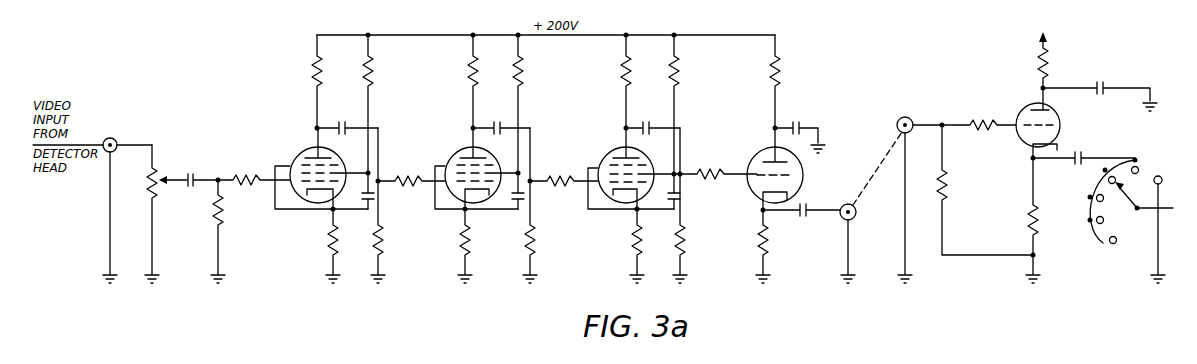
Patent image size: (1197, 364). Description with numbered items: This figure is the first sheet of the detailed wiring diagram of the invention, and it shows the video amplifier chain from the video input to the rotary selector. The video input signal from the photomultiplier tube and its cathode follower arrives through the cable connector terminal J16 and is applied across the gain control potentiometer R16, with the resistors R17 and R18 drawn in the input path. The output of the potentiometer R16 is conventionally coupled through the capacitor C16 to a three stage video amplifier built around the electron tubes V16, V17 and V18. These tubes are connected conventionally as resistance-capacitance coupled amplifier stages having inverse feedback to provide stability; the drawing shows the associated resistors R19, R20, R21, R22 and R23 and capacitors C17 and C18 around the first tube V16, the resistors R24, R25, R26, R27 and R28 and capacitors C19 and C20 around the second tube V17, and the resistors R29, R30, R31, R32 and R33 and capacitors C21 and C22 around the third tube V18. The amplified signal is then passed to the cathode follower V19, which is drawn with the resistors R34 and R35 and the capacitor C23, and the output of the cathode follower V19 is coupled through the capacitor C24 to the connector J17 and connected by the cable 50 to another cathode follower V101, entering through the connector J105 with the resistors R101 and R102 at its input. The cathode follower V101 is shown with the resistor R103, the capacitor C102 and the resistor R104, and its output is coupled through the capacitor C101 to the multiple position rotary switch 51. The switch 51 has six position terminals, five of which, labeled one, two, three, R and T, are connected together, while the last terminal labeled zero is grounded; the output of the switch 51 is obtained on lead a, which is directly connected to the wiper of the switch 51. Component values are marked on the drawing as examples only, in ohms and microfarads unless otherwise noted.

The cable connector terminal J16 is at (127, 202).
The gain control potentiometer R16 is at (152, 214).
The capacitor C16 is at (191, 165).
The resistor 10K R17 is at (204, 231).
The resistor 100 R18 is at (254, 182).
The electron tube V16 is at (322, 166).
The resistor 4.7K R19 is at (298, 83).
The resistor 27K R20 is at (384, 114).
The capacitor .01 C17 is at (355, 195).
The capacitor .01 C18 is at (347, 114).
The resistor 1K R21 is at (316, 246).
The resistor 100K R22 is at (395, 205).
The resistor 100 R23 is at (411, 182).
The electron tube V17 is at (475, 166).
The resistor 4.7K R24 is at (454, 83).
The resistor 27K R25 is at (534, 114).
The capacitor .01 C19 is at (507, 195).
The capacitor .01 C20 is at (501, 114).
The resistor 680 R26 is at (479, 246).
The resistor 100K R27 is at (546, 205).
The resistor 100 R28 is at (564, 184).
The electron tube V18 is at (632, 166).
The resistor 10K R29 is at (610, 83).
The capacitor .001 C22 is at (653, 115).
The resistor 27K R30 is at (693, 114).
The capacitor .01 C21 is at (662, 197).
The resistor 180 R31 is at (622, 246).
The resistor 100K R32 is at (696, 205).
The resistor 100 R33 is at (718, 175).
The cathode follower V19 is at (755, 166).
The resistor 1K R34 is at (758, 83).
The capacitor .01 C23 is at (800, 125).
The resistor 1K R35 is at (751, 246).
The capacitor C24 is at (801, 225).
The output jack J17 is at (859, 241).
The cable 50 is at (877, 170).
The input jack J105 is at (918, 192).
The resistor 1 MEG R101 is at (986, 190).
The resistor 100 R102 is at (979, 109).
The cathode follower V101 is at (1071, 124).
The resistor 1.1K R103 is at (1039, 52).
The capacitor 0.1 C102 is at (1100, 83).
The resistor 10K R104 is at (1013, 220).
The capacitor C101 is at (1084, 172).
The multiple position rotary switch 51 is at (1123, 200).